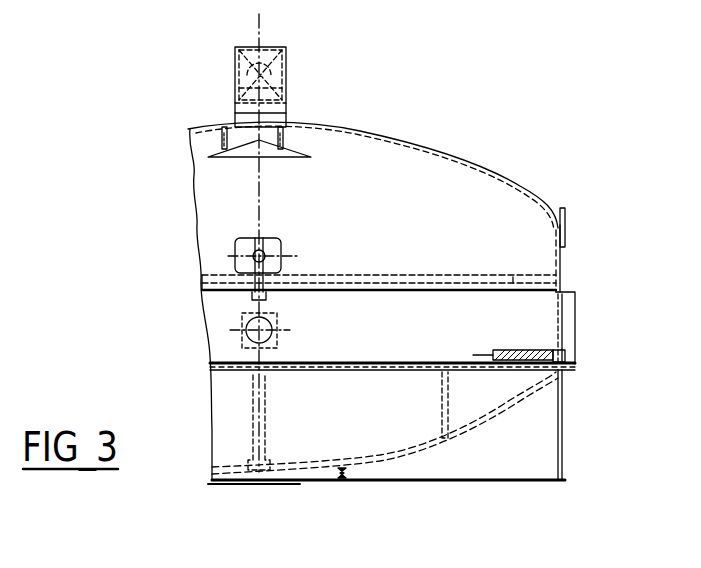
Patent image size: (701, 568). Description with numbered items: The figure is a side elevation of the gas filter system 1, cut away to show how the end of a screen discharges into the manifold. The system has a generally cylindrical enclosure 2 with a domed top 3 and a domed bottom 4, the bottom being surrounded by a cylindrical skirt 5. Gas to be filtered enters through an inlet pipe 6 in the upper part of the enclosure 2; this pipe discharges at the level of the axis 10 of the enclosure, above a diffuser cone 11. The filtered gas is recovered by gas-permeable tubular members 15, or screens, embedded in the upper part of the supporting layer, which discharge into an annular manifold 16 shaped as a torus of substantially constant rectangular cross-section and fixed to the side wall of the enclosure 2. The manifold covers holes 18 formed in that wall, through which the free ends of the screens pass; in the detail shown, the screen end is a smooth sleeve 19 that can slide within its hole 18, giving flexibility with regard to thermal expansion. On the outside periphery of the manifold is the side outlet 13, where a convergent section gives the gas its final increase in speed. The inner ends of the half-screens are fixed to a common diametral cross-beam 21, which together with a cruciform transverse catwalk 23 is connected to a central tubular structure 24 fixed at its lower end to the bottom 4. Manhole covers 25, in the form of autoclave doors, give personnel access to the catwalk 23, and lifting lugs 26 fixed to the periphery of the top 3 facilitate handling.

The gas filter system 1 is at (492, 168).
The enclosure 2 is at (562, 284).
The top 3 is at (397, 139).
The bottom 4 is at (395, 457).
The cylindrical skirt 5 is at (563, 443).
The inlet pipe 6 is at (237, 100).
The axis 10 is at (258, 21).
The diffuser cone 11 is at (240, 152).
The side outlet 13 is at (244, 341).
The tubular members 15 is at (520, 363).
The annular manifold 16 is at (576, 302).
The holes 18 is at (483, 352).
The smooth sleeve 19 is at (566, 361).
The diametral cross-beam 21 is at (475, 371).
The transverse catwalk 23 is at (514, 276).
The central tubular structure 24 is at (252, 424).
The manhole covers 25 is at (240, 252).
The lifting lugs 26 is at (566, 217).